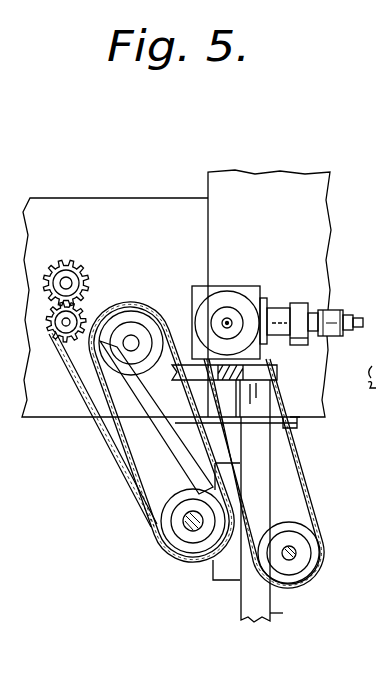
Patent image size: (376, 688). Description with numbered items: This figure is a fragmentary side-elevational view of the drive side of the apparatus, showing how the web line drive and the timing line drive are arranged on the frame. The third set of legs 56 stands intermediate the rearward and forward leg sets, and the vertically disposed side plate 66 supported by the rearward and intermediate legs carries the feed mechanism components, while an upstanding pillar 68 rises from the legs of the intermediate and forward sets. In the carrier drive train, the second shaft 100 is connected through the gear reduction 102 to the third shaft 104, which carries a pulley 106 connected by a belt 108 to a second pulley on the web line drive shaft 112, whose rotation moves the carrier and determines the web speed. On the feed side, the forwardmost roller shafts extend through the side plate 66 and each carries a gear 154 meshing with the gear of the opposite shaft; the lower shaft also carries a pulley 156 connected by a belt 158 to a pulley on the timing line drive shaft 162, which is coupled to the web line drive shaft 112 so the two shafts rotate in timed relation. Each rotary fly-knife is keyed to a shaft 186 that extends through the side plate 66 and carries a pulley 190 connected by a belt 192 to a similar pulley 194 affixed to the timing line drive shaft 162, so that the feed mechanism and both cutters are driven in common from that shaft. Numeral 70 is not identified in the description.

The third set of legs 56 is at (276, 613).
The side plate 66 is at (150, 207).
The pillar 68 is at (252, 184).
The housing 70 is at (361, 130).
The second shaft 100 is at (358, 314).
The gear reduction 102 is at (248, 287).
The third shaft 104 is at (212, 316).
The pulley 106 is at (221, 300).
The belt 108 is at (340, 450).
The web line drive shaft 112 is at (292, 561).
The gear 154 is at (86, 318).
The pulley 156 is at (43, 338).
The belt 158 is at (92, 405).
The timing line drive shaft 162 is at (186, 522).
The shaft 186 is at (131, 340).
The pulley 190 is at (118, 316).
The belt 192 is at (132, 455).
The pulley 194 is at (169, 553).